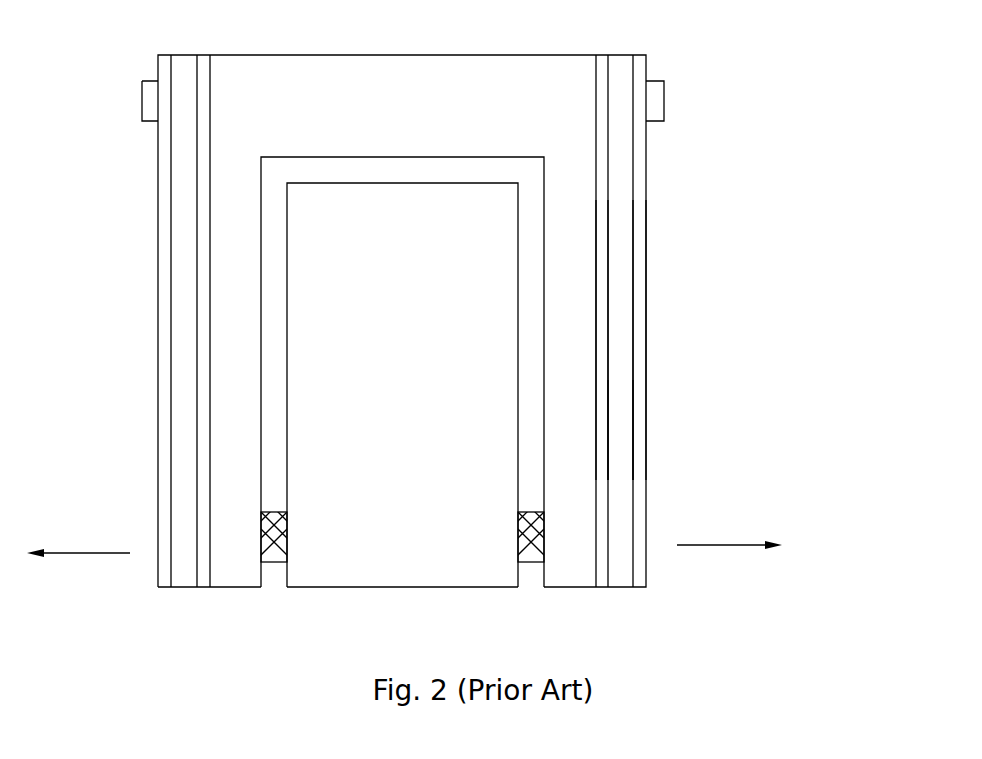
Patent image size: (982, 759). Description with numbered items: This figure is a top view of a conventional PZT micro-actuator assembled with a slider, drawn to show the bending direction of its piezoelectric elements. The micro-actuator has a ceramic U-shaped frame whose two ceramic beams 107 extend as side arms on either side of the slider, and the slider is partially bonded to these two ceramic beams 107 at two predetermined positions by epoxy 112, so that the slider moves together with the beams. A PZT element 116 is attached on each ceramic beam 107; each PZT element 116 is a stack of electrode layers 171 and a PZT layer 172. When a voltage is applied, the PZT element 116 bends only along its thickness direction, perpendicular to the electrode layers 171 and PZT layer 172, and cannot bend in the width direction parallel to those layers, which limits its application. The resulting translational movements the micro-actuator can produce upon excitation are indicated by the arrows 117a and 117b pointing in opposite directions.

The ceramic beam 107 is at (573, 267).
The PZT element 116 is at (187, 266).
The electrode layers 171 is at (605, 336).
The PZT layer 172 is at (625, 456).
The epoxy 112 is at (278, 562).
The arrow 117a is at (729, 524).
The arrow 117b is at (78, 530).